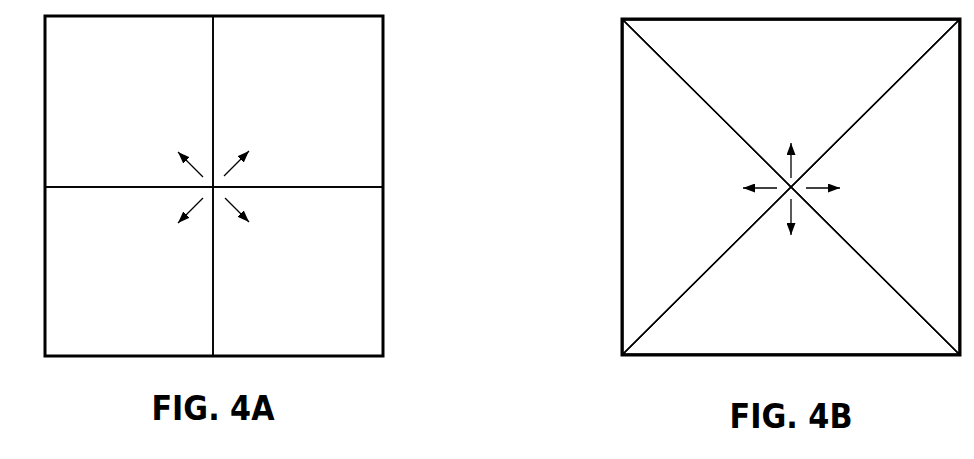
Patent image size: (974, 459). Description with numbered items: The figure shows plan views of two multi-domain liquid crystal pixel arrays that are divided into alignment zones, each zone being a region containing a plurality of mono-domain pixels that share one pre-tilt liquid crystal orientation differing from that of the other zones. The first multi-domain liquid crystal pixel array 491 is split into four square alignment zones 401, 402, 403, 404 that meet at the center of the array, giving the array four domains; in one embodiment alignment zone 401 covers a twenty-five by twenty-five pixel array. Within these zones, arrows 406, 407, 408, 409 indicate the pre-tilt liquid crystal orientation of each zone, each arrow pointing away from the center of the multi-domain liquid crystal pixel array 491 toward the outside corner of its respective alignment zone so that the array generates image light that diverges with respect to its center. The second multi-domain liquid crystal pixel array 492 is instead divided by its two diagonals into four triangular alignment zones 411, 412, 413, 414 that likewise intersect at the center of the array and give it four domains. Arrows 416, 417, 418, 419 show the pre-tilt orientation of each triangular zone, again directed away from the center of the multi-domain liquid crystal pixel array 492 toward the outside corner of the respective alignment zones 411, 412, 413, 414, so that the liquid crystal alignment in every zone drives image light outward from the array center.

In FIG. 4A, the alignment zone 401 is at (284, 87).
In FIG. 4A, the alignment zone 402 is at (284, 340).
In FIG. 4A, the alignment zone 403 is at (115, 340).
In FIG. 4A, the alignment zone 404 is at (115, 87).
In FIG. 4A, the arrow 406 is at (250, 162).
In FIG. 4A, the arrow 407 is at (250, 214).
In FIG. 4A, the arrow 408 is at (182, 215).
In FIG. 4A, the arrow 409 is at (185, 163).
In FIG. 4B, the alignment zone 411 is at (948, 252).
In FIG. 4B, the alignment zone 412 is at (759, 350).
In FIG. 4B, the alignment zone 413 is at (714, 164).
In FIG. 4B, the alignment zone 414 is at (907, 65).
In FIG. 4B, the arrow 416 is at (837, 185).
In FIG. 4B, the arrow 417 is at (791, 237).
In FIG. 4B, the arrow 418 is at (759, 193).
In FIG. 4B, the arrow 419 is at (789, 145).
In FIG. 4A, the multi-domain liquid crystal pixel array 491 is at (384, 72).
In FIG. 4B, the multi-domain liquid crystal pixel array 492 is at (622, 278).